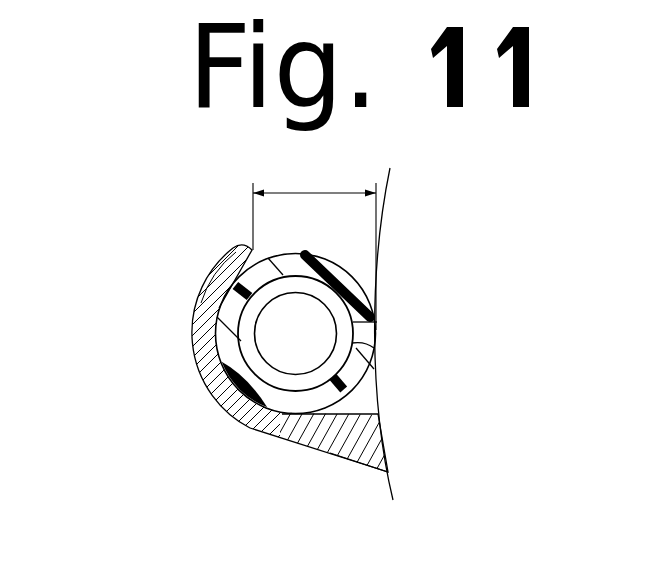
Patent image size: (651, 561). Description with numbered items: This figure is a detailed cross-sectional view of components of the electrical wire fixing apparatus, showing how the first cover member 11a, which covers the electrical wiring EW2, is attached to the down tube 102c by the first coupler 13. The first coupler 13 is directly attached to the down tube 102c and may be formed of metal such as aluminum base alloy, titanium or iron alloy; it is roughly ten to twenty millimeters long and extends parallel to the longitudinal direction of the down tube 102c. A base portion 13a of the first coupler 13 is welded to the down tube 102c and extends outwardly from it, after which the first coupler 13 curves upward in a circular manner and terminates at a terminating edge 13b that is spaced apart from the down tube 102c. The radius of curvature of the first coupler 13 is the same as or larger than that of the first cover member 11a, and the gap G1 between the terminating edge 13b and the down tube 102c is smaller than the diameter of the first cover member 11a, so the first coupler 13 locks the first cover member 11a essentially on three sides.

The first coupler 13 is at (280, 433).
The base portion 13a is at (377, 442).
The terminating edge 13b is at (234, 252).
The first cover member 11a is at (237, 363).
The electrical wiring EW2 is at (303, 327).
The down tube 102c is at (385, 193).
The gap G1 is at (314, 243).